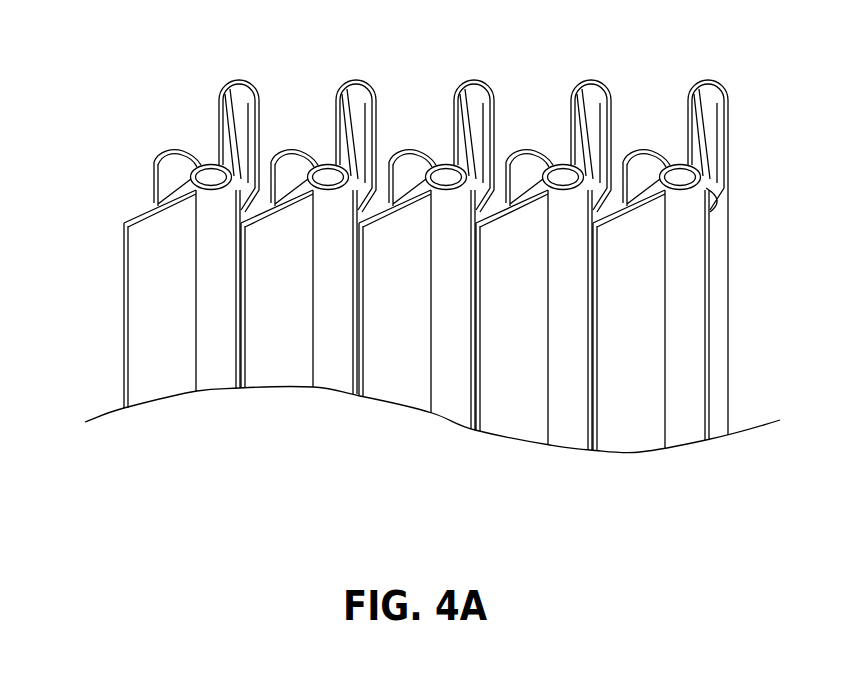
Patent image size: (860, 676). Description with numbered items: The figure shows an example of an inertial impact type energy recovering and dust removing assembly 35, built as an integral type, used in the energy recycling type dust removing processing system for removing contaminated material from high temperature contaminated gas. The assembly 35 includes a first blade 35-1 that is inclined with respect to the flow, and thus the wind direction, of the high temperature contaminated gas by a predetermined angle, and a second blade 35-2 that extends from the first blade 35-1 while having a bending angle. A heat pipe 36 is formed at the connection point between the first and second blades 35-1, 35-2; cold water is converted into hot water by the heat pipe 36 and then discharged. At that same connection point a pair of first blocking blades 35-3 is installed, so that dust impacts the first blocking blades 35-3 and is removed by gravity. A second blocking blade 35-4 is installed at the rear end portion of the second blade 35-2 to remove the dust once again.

The inertial impact type energy recovering and dust removing assembly 35 is at (68, 64).
The first blade 35-1 is at (122, 260).
The second blade 35-2 is at (220, 128).
The first blocking blades 35-3 is at (160, 158).
The second blocking blade 35-4 is at (270, 70).
The heat pipe 36 is at (192, 175).